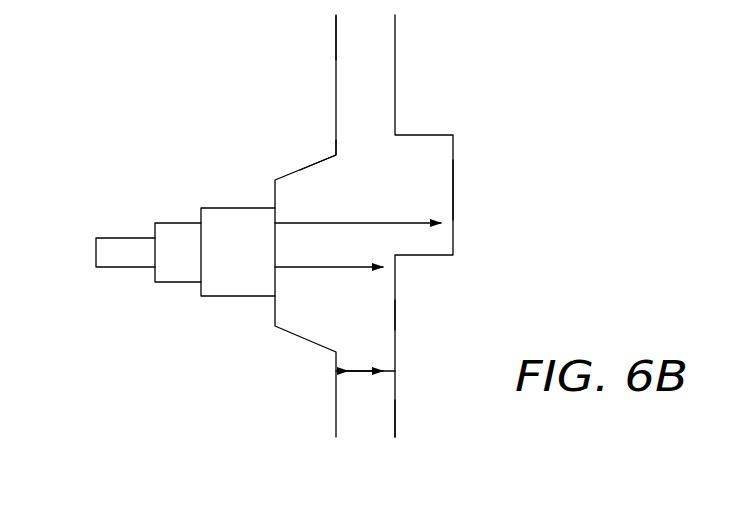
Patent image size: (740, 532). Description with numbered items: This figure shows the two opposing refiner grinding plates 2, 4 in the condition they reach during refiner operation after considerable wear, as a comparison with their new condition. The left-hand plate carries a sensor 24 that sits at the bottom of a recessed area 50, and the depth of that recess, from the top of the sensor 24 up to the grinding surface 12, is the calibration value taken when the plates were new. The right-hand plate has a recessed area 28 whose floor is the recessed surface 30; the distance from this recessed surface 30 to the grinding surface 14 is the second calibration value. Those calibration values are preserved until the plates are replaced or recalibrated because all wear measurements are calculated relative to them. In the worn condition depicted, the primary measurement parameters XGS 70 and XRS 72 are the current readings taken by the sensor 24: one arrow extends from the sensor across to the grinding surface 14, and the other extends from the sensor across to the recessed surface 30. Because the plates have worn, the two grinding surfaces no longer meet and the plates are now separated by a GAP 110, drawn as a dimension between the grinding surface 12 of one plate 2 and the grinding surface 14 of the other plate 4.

The grinding plate 2 is at (279, 432).
The grinding plate 4 is at (451, 392).
The grinding surface 12 is at (336, 50).
The grinding surface 14 is at (395, 420).
The sensor 24 is at (227, 208).
The recessed area 28 is at (368, 160).
The recessed surface 30 is at (453, 191).
The recessed area 50 is at (352, 314).
The XGS 70 is at (350, 269).
The XRS 72 is at (395, 226).
The GAP 110 is at (358, 371).